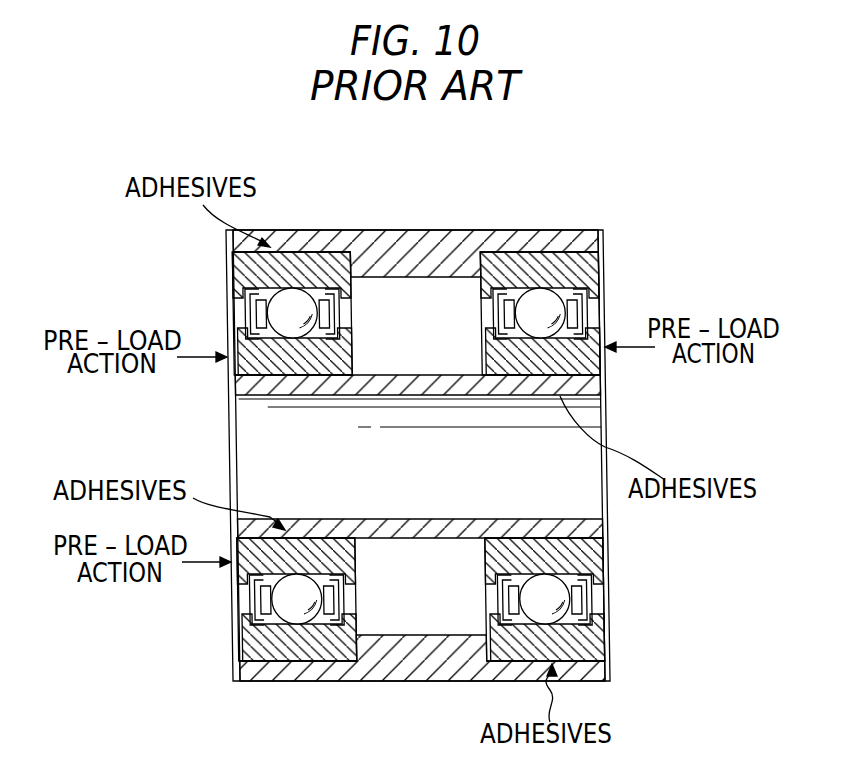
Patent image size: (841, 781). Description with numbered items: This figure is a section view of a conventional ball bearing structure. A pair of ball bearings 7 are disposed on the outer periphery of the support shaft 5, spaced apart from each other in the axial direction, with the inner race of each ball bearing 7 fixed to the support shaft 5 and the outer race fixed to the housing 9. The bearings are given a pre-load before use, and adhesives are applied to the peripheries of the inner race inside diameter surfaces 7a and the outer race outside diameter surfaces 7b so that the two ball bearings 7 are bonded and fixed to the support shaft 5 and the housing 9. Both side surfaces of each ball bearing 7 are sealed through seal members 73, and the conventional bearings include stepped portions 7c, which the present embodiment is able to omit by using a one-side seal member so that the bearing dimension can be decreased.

The ball bearing 7 is at (412, 447).
The housing 9 is at (592, 230).
The support shaft 5 is at (605, 378).
The inner race inside diameter surface 7a is at (545, 394).
The outer race outside diameter surface 7b is at (543, 262).
The stepped portion 7c is at (513, 340).
The seal member 73 is at (243, 313).